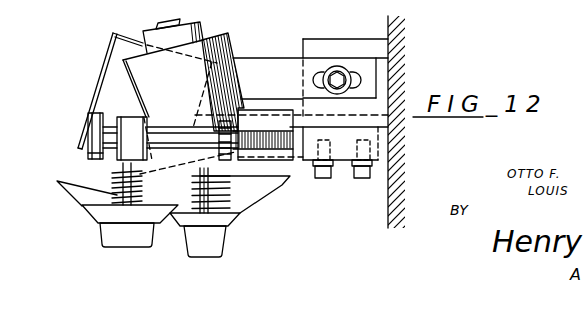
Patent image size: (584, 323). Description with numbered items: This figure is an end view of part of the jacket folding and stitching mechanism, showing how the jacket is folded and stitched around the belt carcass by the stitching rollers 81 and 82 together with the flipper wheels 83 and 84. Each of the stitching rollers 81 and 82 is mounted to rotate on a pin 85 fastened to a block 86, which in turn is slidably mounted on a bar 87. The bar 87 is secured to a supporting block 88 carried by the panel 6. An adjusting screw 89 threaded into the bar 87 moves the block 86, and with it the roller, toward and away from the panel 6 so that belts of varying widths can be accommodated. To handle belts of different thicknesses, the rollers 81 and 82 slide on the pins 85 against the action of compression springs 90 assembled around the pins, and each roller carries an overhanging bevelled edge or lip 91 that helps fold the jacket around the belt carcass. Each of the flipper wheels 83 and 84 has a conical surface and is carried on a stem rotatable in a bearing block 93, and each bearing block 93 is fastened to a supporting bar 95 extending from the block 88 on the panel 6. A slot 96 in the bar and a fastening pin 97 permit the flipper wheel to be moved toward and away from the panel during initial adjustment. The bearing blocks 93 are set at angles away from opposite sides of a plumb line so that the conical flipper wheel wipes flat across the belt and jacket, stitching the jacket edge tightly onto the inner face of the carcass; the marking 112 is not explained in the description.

The panel 6 is at (387, 207).
The reference line 112 is at (420, 2).
The stitching roller 81 is at (215, 250).
The stitching roller 82 is at (138, 242).
The flipper wheel 83 is at (279, 195).
The flipper wheel 84 is at (61, 186).
The pin 85 is at (113, 188).
The block 86 is at (288, 166).
The bar 87 is at (300, 166).
The supporting block 88 is at (337, 153).
The adjusting screw 89 is at (87, 118).
The compression spring 90 is at (191, 190).
The bevelled edge or lip 91 is at (82, 209).
The bearing block 93 is at (101, 72).
The supporting bar 95 is at (265, 62).
The slot 96 is at (318, 72).
The fastening pin 97 is at (339, 71).